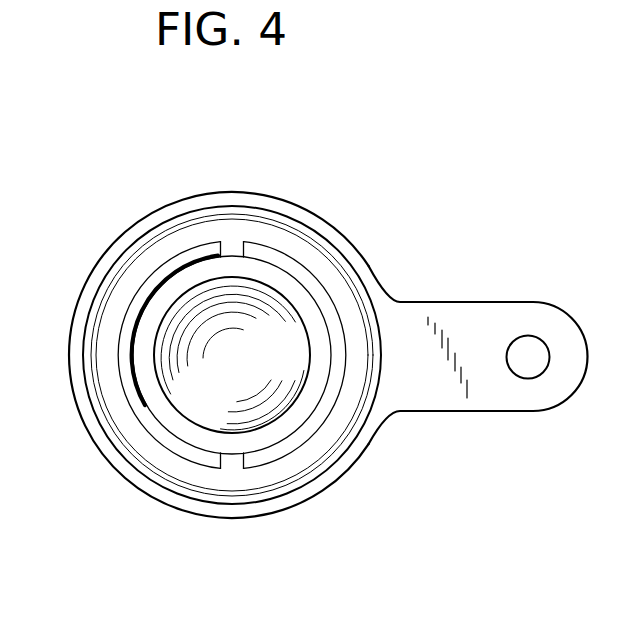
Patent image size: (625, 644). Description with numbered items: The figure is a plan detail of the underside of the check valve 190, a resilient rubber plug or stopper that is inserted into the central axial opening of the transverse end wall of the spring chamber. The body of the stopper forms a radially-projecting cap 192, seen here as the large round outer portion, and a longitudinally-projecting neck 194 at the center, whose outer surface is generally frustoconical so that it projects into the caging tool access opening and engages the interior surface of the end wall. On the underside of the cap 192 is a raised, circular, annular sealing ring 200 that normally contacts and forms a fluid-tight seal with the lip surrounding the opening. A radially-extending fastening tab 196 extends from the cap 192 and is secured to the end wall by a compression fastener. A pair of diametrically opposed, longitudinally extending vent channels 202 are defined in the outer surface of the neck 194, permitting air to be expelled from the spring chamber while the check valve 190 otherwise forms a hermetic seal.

The check valve 190 is at (413, 257).
The cap 192 is at (138, 232).
The neck 194 is at (287, 455).
The fastening tab 196 is at (432, 393).
The sealing ring 200 is at (320, 237).
The vent channels 202 is at (232, 250).